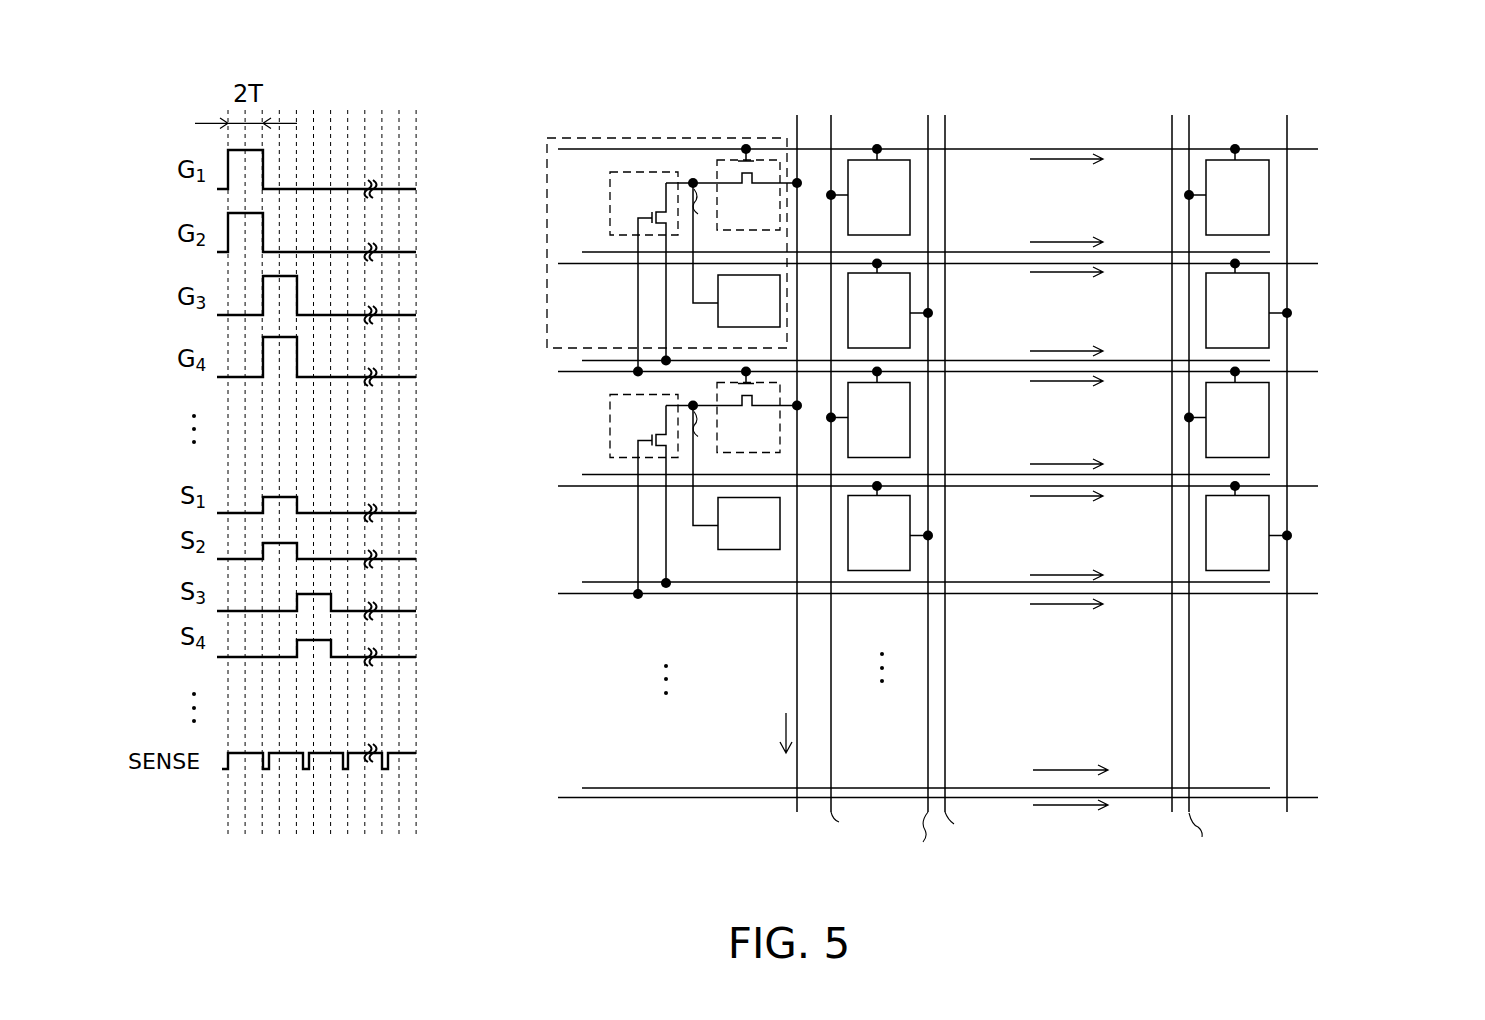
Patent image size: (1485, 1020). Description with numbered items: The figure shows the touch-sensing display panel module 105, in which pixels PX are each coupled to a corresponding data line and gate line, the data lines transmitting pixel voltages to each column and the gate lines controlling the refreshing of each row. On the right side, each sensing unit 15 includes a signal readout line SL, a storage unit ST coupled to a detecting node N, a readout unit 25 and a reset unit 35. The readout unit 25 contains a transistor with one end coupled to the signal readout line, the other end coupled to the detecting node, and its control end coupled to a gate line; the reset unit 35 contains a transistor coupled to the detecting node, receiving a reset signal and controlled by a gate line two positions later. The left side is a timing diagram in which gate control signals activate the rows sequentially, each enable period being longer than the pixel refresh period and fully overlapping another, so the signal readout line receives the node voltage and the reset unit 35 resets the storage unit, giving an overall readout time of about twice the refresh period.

The sensing unit 15 is at (685, 138).
The readout unit 25 is at (724, 161).
The reset unit 35 is at (612, 227).
The touch-sensing display panel module 105 is at (1380, 118).